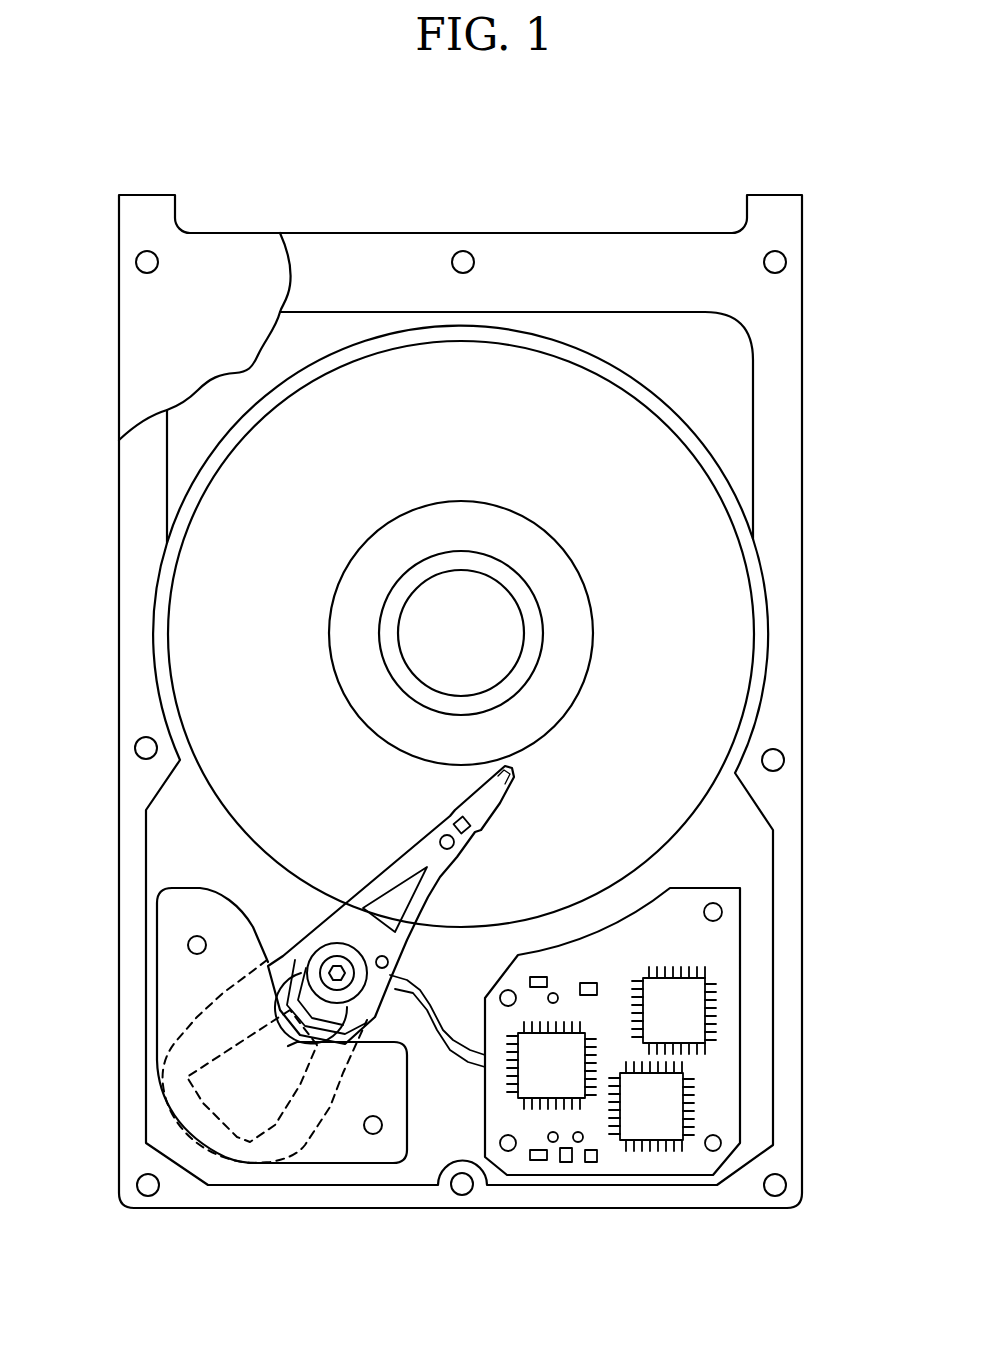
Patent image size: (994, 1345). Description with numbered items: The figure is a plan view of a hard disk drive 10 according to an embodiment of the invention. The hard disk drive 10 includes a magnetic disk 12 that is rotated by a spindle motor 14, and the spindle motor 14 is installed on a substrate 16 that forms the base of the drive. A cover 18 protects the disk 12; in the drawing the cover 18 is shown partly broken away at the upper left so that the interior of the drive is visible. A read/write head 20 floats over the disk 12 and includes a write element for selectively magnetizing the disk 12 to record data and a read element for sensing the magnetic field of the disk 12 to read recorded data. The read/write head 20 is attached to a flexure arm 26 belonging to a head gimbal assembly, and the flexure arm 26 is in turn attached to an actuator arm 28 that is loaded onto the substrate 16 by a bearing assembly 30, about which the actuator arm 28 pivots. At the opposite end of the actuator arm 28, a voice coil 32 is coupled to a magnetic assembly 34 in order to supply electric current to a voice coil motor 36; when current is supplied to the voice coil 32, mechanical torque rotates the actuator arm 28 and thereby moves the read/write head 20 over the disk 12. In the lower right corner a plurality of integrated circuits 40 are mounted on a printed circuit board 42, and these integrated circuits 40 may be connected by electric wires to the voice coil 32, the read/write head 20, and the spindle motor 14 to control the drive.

The hard disk drive 10 is at (788, 566).
The magnetic disk 12 is at (552, 481).
The spindle motor 14 is at (485, 637).
The substrate 16 is at (715, 390).
The cover 18 is at (150, 326).
The read/write head 20 is at (516, 775).
The flexure arm 26 is at (487, 800).
The actuator arm 28 is at (337, 922).
The bearing assembly 30 is at (323, 988).
The voice coil 32 is at (134, 1067).
The magnetic assembly 34 is at (330, 1165).
The voice coil motor 36 is at (237, 1150).
The integrated circuits 40 is at (650, 1120).
The printed circuit board 42 is at (723, 948).